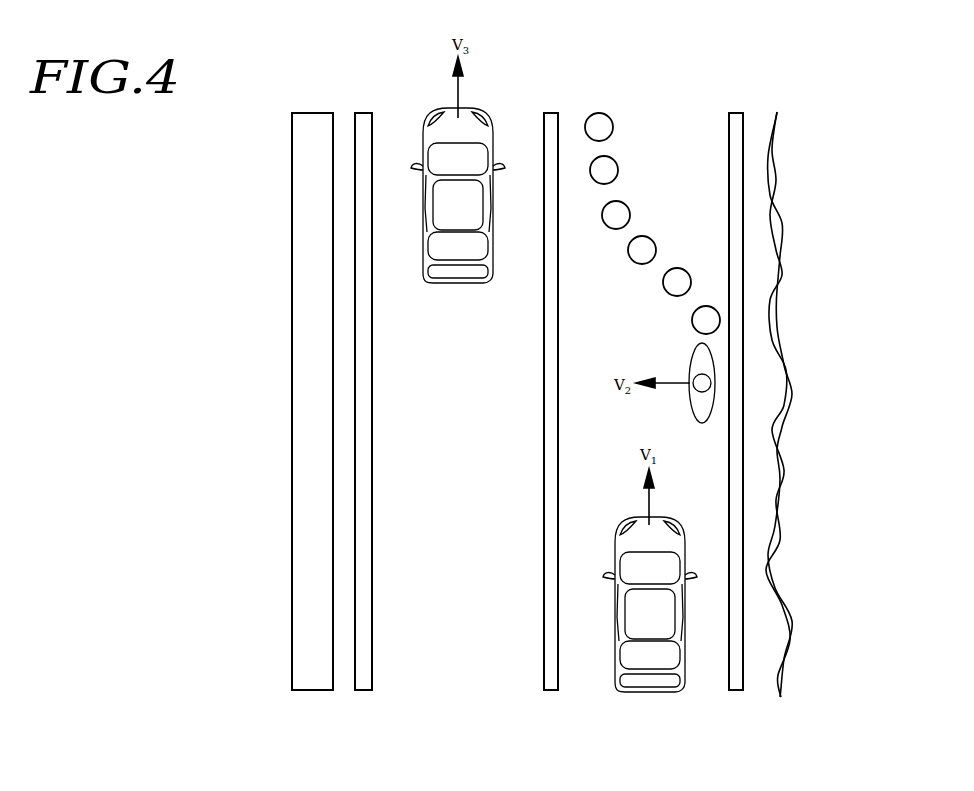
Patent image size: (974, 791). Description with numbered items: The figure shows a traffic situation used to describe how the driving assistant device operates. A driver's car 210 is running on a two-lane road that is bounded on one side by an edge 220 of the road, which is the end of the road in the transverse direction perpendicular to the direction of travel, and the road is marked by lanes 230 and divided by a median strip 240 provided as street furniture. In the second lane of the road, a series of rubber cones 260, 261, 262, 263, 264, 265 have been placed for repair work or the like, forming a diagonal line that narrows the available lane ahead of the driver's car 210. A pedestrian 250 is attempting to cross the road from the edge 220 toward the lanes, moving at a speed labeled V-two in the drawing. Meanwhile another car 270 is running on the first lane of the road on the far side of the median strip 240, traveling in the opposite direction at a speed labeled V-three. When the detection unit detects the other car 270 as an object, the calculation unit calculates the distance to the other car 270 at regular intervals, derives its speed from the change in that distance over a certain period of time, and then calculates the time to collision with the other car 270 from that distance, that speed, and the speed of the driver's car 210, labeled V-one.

The driver's car 210 is at (633, 692).
The edge of the road 220 is at (782, 458).
The lanes 230 is at (361, 693).
The median strip 240 is at (290, 183).
The pedestrian 250 is at (713, 383).
The rubber cone 260 is at (598, 112).
The rubber cone 261 is at (615, 153).
The rubber cone 262 is at (617, 199).
The rubber cone 263 is at (656, 250).
The rubber cone 264 is at (692, 282).
The rubber cone 265 is at (720, 320).
The other car 270 is at (485, 111).